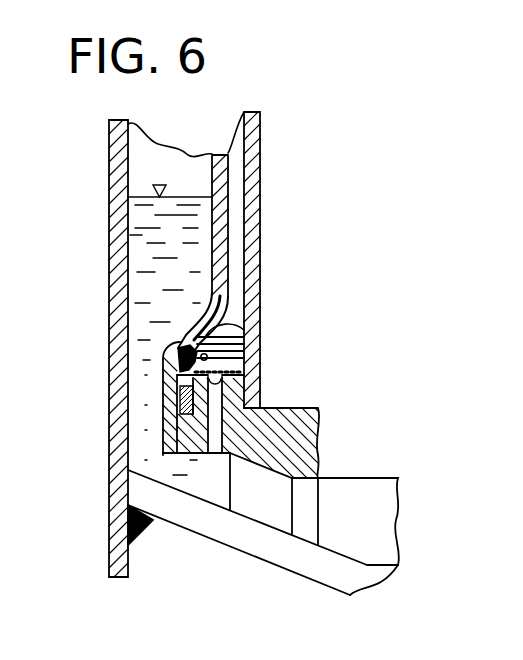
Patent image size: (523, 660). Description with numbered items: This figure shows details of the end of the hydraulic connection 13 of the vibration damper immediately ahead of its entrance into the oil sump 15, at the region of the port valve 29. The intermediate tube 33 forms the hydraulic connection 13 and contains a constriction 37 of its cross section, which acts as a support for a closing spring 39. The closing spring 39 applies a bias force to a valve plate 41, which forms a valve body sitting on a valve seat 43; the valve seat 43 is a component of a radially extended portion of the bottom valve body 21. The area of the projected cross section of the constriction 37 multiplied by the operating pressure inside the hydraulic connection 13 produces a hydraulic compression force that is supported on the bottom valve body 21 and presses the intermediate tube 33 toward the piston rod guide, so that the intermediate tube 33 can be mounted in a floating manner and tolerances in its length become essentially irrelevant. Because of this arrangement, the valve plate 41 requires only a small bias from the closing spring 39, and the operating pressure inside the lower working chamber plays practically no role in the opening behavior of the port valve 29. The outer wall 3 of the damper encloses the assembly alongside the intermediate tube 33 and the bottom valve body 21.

The outer wall 3 is at (255, 277).
The hydraulic connection 13 is at (232, 175).
The oil sump 15 is at (145, 232).
The bottom valve body 21 is at (298, 436).
The port valve 29 is at (152, 388).
The intermediate tube 33 is at (232, 228).
The constriction 37 is at (200, 318).
The closing spring 39 is at (238, 333).
The valve plate 41 is at (240, 377).
The valve seat 43 is at (170, 345).